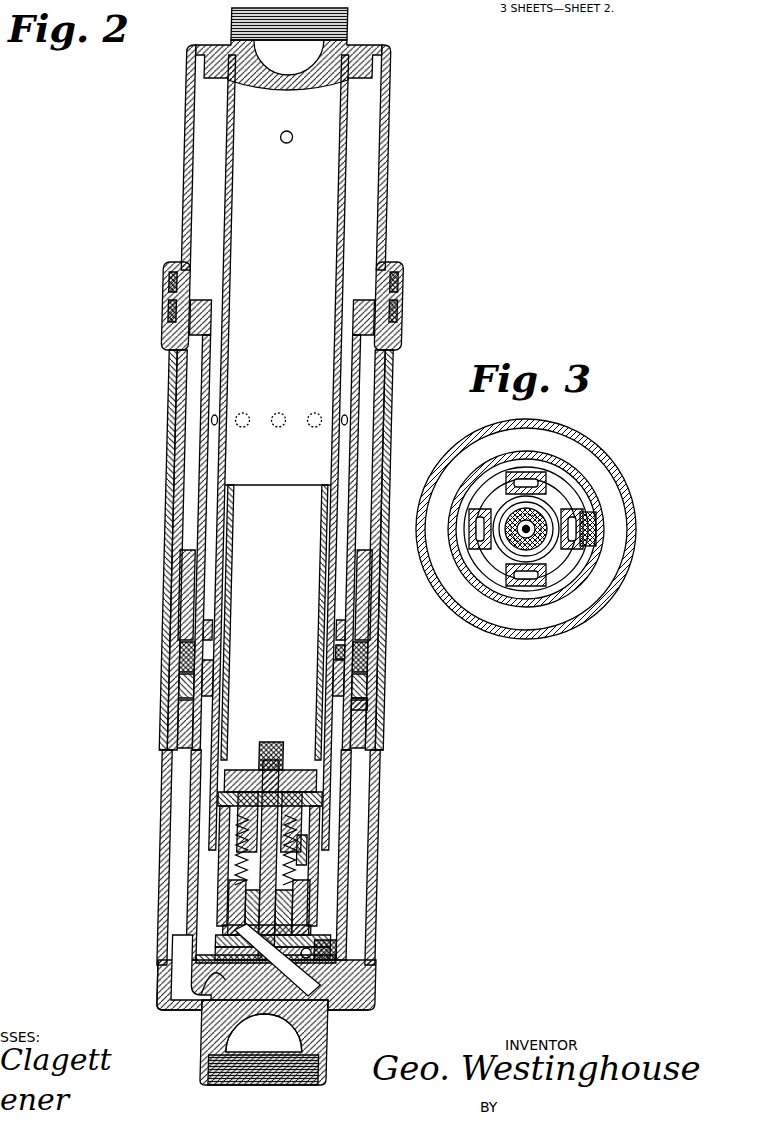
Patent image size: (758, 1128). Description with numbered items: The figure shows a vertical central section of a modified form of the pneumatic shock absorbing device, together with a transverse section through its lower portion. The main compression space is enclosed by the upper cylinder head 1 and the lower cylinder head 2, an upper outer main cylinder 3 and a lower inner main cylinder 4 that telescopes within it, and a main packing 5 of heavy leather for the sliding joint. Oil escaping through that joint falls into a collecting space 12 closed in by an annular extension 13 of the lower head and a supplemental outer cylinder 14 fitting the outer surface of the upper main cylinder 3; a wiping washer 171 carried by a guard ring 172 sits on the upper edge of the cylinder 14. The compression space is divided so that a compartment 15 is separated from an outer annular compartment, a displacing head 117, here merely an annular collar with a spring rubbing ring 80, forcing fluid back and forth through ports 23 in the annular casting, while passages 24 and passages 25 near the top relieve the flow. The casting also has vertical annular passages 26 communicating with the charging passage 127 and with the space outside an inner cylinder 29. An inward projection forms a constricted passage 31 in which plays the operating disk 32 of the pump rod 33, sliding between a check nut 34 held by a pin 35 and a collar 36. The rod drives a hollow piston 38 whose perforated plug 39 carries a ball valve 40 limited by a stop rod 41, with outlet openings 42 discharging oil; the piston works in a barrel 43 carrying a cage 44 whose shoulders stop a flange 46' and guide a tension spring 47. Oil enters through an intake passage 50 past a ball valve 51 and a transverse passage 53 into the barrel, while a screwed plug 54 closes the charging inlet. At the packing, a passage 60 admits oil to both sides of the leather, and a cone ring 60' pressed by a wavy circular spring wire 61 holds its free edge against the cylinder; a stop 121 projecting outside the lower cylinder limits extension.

In FIG. 2, the upper cylinder head 1 is at (355, 48).
In FIG. 2, the lower cylinder head 2 is at (232, 1026).
In FIG. 2, the upper outer main cylinder 3 is at (188, 190).
In FIG. 2, the lower inner main cylinder 4 is at (215, 490).
In FIG. 3, the lower inner main cylinder 4 is at (600, 535).
In FIG. 2, the main packing 5 is at (196, 665).
In FIG. 2, the collecting space 12 is at (214, 936).
In FIG. 3, the collecting space 12 is at (562, 620).
In FIG. 2, the annular extension 13 is at (190, 992).
In FIG. 2, the supplemental outer cylinder 14 is at (183, 785).
In FIG. 3, the supplemental outer cylinder 14 is at (600, 470).
In FIG. 2, the compartment 15 is at (274, 622).
In FIG. 2, the ports 23 is at (245, 862).
In FIG. 3, the ports 23 is at (508, 560).
In FIG. 2, the passages 24 is at (272, 405).
In FIG. 2, the passages 25 is at (338, 137).
In FIG. 2, the annular passages 26 is at (332, 882).
In FIG. 3, the annular passages 26 is at (582, 515).
In FIG. 2, the inner cylinder 29 is at (238, 588).
In FIG. 2, the constricted passage 31 is at (250, 770).
In FIG. 2, the operating disk 32 is at (305, 792).
In FIG. 2, the pump rod 33 is at (262, 775).
In FIG. 2, the check nut 34 is at (289, 746).
In FIG. 2, the pin 35 is at (296, 760).
In FIG. 2, the collar 36 is at (345, 806).
In FIG. 2, the hollow piston 38 is at (250, 918).
In FIG. 2, the perforated plug 39 is at (290, 1002).
In FIG. 2, the ball valve 40 is at (219, 987).
In FIG. 2, the stop rod 41 is at (316, 902).
In FIG. 3, the stop rod 41 is at (548, 560).
In FIG. 2, the outlet openings 42 is at (320, 840).
In FIG. 2, the barrel 43 is at (262, 890).
In FIG. 2, the cage 44 is at (262, 836).
In FIG. 3, the cage 44 is at (502, 545).
In FIG. 2, the flange 46' is at (357, 851).
In FIG. 2, the tension spring 47 is at (262, 908).
In FIG. 3, the tension spring 47 is at (548, 548).
In FIG. 2, the intake passage 50 is at (352, 960).
In FIG. 2, the ball valve 51 is at (340, 951).
In FIG. 2, the transverse passage 53 is at (335, 932).
In FIG. 2, the screwed plug 54 is at (354, 1012).
In FIG. 2, the passage 60 is at (237, 652).
In FIG. 2, the cone ring 60' is at (389, 664).
In FIG. 2, the circular spring wire 61 is at (372, 660).
In FIG. 2, the spring rubbing ring 80 is at (200, 708).
In FIG. 2, the displacing head 117 is at (386, 702).
In FIG. 2, the stop 121 is at (172, 318).
In FIG. 2, the charging passage 127 is at (345, 966).
In FIG. 2, the wiping washer 171 is at (405, 275).
In FIG. 2, the guard ring 172 is at (410, 318).